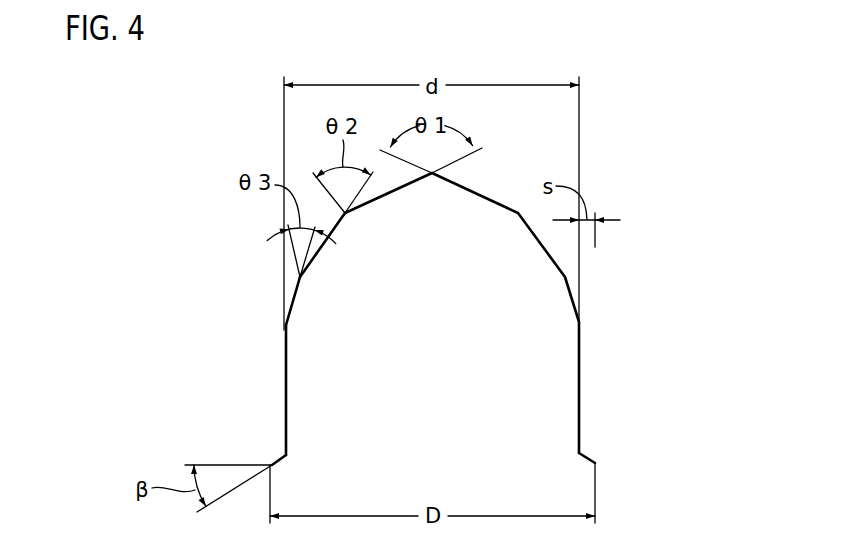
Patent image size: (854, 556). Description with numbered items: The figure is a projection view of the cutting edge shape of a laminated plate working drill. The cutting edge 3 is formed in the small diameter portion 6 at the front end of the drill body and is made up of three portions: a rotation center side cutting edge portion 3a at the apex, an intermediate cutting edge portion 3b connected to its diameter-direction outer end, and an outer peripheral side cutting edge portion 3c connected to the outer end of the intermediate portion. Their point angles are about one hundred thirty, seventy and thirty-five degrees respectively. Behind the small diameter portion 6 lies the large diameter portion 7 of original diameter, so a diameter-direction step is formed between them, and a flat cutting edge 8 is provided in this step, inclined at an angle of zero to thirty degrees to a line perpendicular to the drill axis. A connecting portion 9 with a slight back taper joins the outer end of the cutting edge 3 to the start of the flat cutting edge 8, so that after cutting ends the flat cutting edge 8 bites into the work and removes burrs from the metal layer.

The cutting edge 3 is at (380, 264).
The rotation center side cutting edge portion 3a is at (390, 197).
The intermediate cutting edge portion 3b is at (323, 247).
The outer peripheral side cutting edge portion 3c is at (293, 302).
The small diameter portion 6 is at (630, 173).
The large diameter portion 7 is at (630, 465).
The flat cutting edge 8 is at (278, 457).
The connecting portion 9 is at (286, 392).